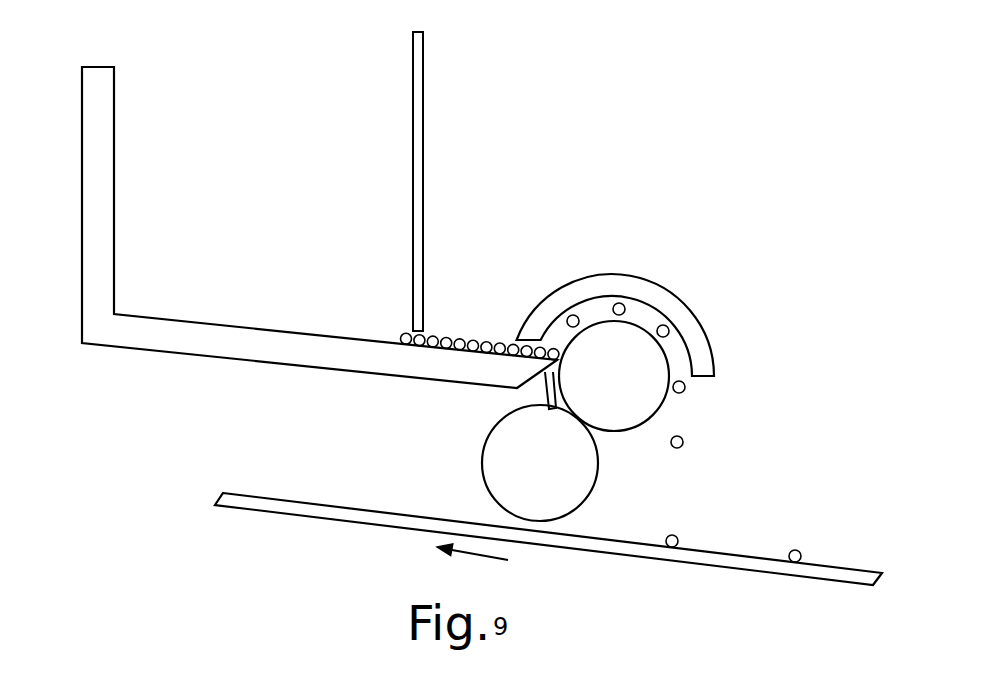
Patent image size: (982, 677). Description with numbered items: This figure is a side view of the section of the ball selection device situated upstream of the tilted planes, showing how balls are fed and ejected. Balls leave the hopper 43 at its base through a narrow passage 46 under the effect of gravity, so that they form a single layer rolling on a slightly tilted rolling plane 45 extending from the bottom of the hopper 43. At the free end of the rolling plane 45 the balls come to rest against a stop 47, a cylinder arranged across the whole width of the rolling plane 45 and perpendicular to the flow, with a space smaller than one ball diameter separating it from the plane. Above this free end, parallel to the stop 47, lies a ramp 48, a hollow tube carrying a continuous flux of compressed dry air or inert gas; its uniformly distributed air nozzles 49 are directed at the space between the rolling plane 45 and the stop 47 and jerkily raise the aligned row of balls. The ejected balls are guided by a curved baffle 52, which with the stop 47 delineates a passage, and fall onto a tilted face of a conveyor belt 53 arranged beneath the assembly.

The hopper 43 is at (397, 100).
The rolling plane 45 is at (470, 360).
The narrow passage 46 is at (430, 328).
The stop 47 is at (650, 402).
The ramp 48 is at (577, 479).
The air nozzles 49 is at (540, 392).
The baffle 52 is at (685, 305).
The conveyor belt 53 is at (718, 557).